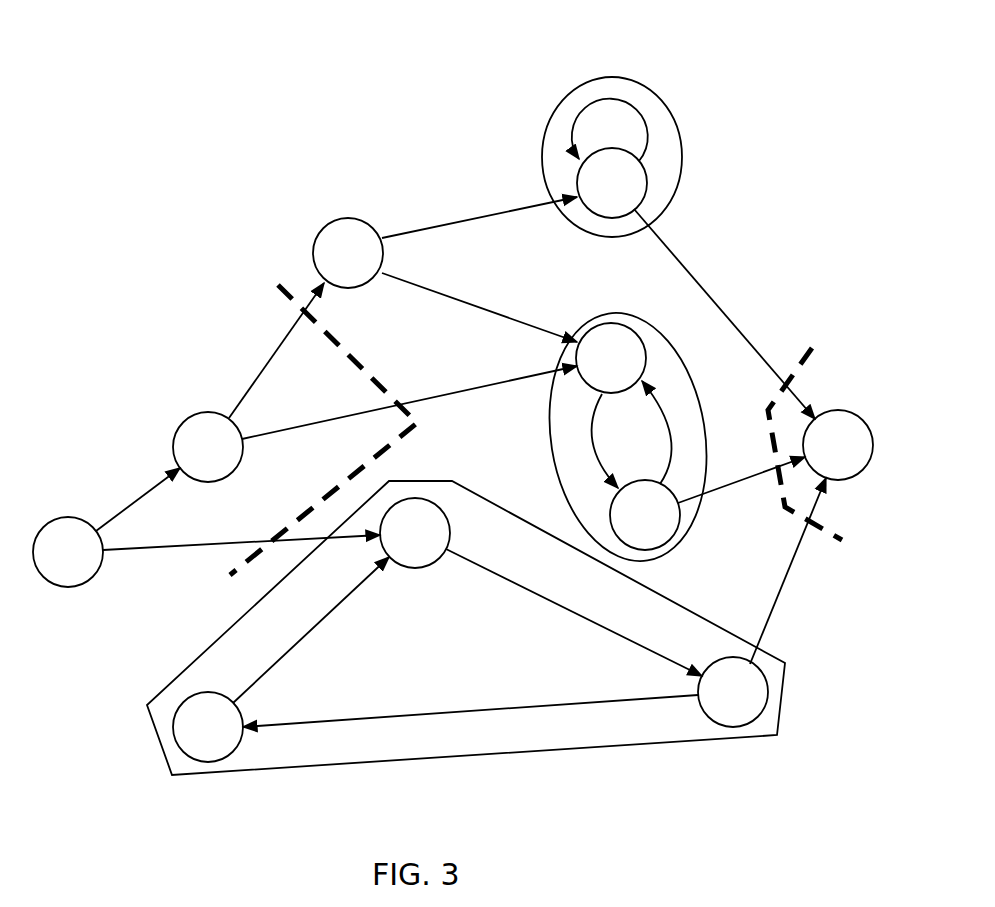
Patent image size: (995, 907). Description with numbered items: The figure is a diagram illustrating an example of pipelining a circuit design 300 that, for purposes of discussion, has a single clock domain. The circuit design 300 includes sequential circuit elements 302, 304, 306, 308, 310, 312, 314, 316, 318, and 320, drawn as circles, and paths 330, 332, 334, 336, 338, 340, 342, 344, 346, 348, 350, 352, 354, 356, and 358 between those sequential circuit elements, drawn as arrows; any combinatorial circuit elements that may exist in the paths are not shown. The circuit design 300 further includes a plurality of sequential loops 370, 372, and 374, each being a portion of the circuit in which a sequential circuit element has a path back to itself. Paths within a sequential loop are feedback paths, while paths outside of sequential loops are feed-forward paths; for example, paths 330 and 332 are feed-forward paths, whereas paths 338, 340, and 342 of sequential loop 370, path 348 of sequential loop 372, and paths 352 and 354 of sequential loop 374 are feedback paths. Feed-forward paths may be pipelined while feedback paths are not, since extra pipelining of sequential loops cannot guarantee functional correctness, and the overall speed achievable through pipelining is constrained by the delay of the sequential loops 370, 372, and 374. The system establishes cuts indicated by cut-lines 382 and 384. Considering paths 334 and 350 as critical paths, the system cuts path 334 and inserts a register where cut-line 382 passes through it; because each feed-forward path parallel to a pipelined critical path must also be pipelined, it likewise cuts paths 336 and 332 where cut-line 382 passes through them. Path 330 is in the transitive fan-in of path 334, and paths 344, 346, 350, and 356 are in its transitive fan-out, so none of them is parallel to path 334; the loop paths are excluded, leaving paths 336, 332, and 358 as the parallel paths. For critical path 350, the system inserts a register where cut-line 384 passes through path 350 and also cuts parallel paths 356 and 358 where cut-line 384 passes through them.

The circuit design 300 is at (419, 60).
The sequential circuit element 302 is at (68, 552).
The sequential circuit element 304 is at (208, 447).
The sequential circuit element 306 is at (348, 253).
The sequential circuit element 308 is at (415, 533).
The sequential circuit element 310 is at (733, 692).
The sequential circuit element 312 is at (208, 727).
The sequential circuit element 314 is at (612, 183).
The sequential circuit element 316 is at (611, 358).
The sequential circuit element 318 is at (645, 515).
The sequential circuit element 320 is at (838, 445).
The path 330 is at (137, 495).
The path 332 is at (177, 542).
The path 334 is at (273, 353).
The path 336 is at (320, 420).
The path 338 is at (565, 613).
The path 340 is at (473, 705).
The path 342 is at (342, 602).
The path 344 is at (462, 220).
The path 346 is at (500, 315).
The path 348 is at (613, 100).
The path 350 is at (693, 270).
The path 352 is at (663, 403).
The path 354 is at (591, 424).
The path 356 is at (718, 488).
The path 358 is at (803, 550).
The sequential loop 370 is at (466, 628).
The sequential loop 372 is at (675, 128).
The sequential loop 374 is at (627, 436).
The cut-line 382 is at (277, 288).
The cut-line 384 is at (808, 350).